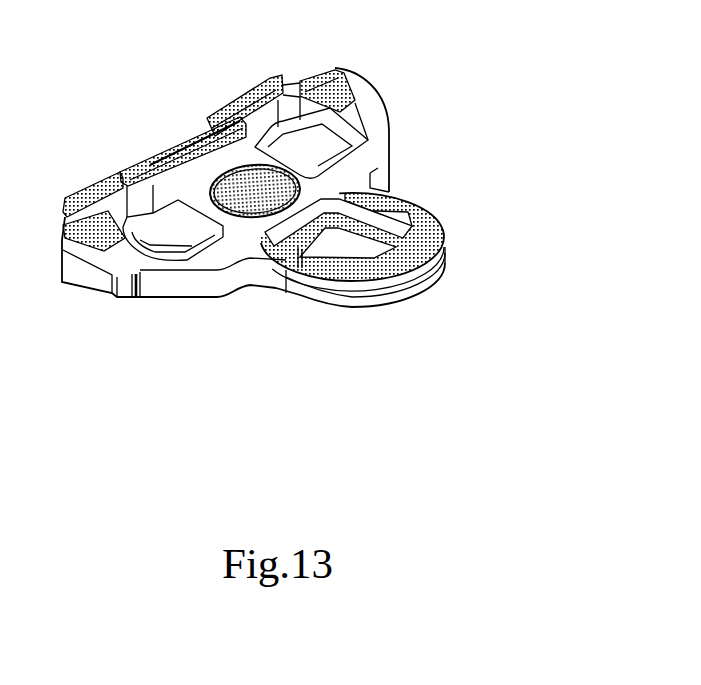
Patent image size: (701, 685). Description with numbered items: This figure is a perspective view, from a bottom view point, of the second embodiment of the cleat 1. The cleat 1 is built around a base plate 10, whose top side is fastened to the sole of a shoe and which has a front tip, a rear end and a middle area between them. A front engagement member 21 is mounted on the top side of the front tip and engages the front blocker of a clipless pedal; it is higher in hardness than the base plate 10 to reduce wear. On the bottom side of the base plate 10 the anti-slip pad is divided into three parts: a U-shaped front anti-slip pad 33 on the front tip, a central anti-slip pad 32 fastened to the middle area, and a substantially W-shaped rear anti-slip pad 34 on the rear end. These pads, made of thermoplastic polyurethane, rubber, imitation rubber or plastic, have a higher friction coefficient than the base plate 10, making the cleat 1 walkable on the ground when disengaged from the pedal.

The cleat 1 is at (131, 352).
The base plate 10 is at (378, 156).
The front engagement member 21 is at (414, 284).
The central anti-slip pad 32 is at (243, 182).
The front anti-slip pad 33 is at (420, 240).
The rear anti-slip pad 34 is at (337, 68).